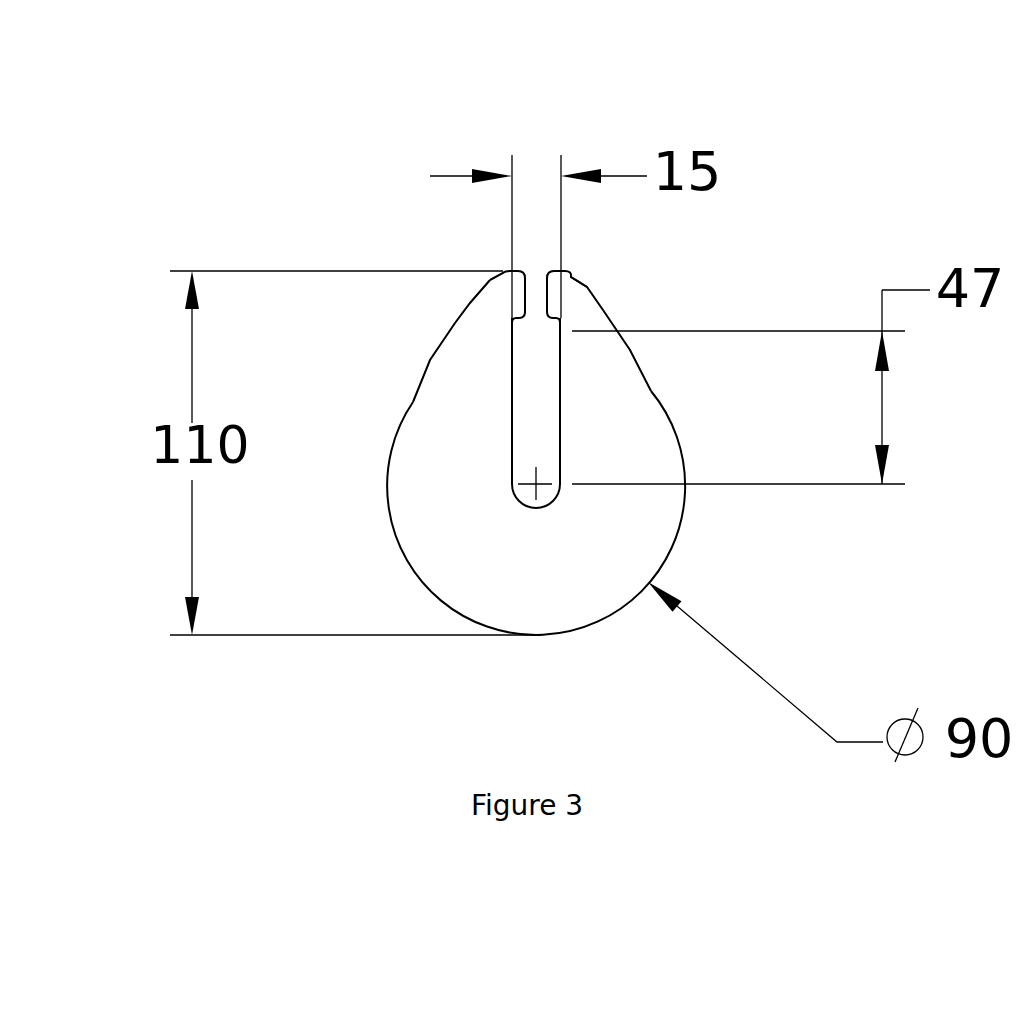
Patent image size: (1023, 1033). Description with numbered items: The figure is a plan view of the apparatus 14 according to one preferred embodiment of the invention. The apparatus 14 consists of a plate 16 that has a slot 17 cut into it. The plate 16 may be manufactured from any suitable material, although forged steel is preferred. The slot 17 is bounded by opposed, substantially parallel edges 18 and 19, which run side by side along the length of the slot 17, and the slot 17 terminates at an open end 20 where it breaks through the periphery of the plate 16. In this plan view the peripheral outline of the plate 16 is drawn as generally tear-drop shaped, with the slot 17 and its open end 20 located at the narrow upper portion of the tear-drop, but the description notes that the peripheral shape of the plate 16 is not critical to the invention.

The apparatus 14 is at (785, 165).
The plate 16 is at (682, 527).
The slot 17 is at (537, 333).
The edge 18 is at (563, 390).
The edge 19 is at (507, 378).
The open end 20 is at (548, 268).